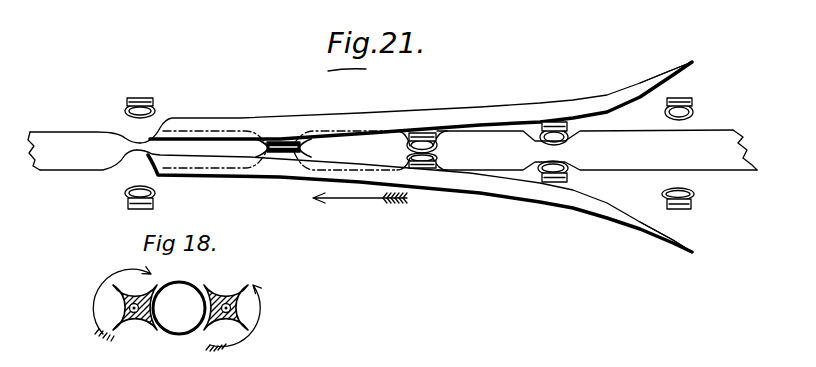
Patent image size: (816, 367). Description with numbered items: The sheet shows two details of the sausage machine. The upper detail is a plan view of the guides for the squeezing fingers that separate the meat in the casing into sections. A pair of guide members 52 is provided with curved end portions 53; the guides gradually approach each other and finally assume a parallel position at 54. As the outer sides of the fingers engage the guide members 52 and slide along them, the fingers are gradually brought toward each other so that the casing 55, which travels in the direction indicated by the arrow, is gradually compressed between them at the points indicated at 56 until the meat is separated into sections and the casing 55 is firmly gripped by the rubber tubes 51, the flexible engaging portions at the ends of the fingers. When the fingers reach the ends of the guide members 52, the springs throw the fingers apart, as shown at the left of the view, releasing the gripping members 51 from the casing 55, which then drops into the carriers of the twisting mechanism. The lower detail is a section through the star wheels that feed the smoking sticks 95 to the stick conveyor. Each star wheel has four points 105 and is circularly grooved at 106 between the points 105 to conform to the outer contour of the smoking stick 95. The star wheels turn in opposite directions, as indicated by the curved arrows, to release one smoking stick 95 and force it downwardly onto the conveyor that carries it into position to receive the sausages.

In FIG. 21, the rubber tubes 51 is at (157, 110).
In FIG. 21, the guide members 52 is at (453, 117).
In FIG. 21, the curved end portions 53 is at (657, 84).
In FIG. 21, the parallel position 54 is at (262, 142).
In FIG. 21, the casing 55 is at (70, 156).
In FIG. 21, the compression points 56 is at (424, 163).
In FIG. 18, the smoking stick 95 is at (185, 298).
In FIG. 18, the points 105 is at (255, 285).
In FIG. 18, the circular grooves 106 is at (240, 307).